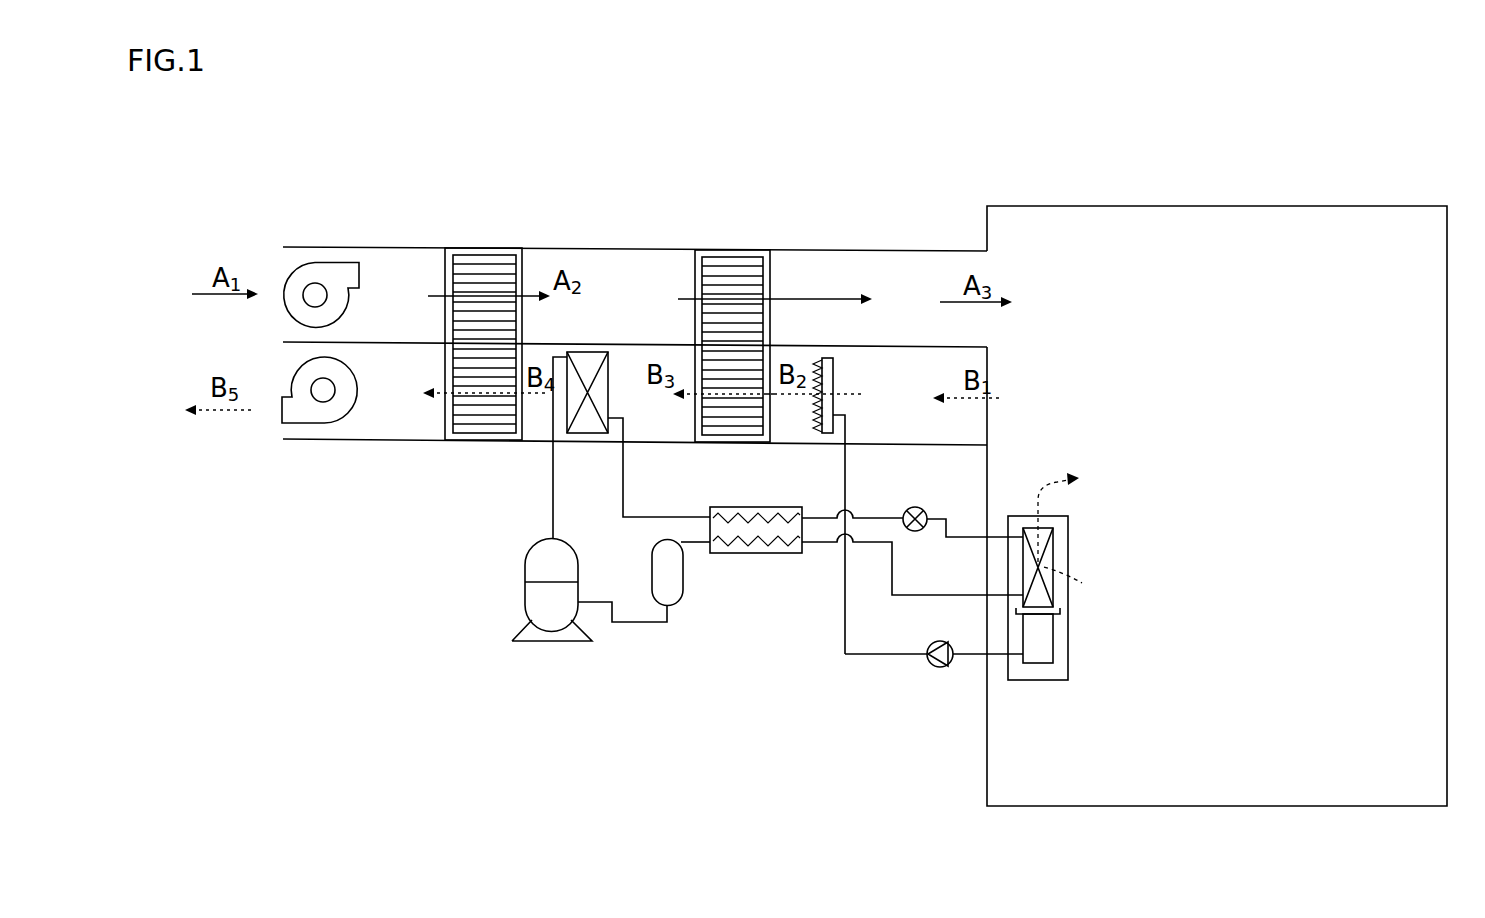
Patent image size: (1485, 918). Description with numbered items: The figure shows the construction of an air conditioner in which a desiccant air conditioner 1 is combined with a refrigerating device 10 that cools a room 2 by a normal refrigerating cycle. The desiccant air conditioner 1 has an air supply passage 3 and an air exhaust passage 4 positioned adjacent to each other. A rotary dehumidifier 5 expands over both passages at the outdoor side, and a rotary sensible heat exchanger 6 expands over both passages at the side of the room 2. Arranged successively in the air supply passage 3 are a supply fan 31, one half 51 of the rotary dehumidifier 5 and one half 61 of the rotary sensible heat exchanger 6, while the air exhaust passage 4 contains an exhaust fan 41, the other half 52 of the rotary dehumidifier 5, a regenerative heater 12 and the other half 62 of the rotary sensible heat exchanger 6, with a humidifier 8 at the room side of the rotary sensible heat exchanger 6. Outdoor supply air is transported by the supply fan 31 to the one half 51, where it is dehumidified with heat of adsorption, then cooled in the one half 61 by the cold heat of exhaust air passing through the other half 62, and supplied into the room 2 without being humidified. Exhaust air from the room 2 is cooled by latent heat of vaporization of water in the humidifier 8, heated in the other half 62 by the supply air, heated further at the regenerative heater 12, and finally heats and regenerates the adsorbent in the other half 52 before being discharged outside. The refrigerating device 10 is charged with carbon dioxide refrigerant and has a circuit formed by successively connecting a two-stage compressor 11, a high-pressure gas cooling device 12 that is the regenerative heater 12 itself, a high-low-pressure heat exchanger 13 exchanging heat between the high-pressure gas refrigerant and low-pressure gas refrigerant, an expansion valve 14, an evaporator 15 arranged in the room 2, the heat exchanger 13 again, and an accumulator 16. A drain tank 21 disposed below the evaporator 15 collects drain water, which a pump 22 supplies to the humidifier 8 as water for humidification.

The desiccant air conditioner 1 is at (613, 228).
The room 2 is at (1073, 206).
The air supply passage 3 is at (415, 247).
The air exhaust passage 4 is at (390, 443).
The rotary dehumidifier 5 is at (480, 250).
The rotary sensible heat exchanger 6 is at (730, 250).
The humidifier 8 is at (826, 435).
The refrigerating device 10 is at (640, 652).
The two-stage compressor 11 is at (525, 600).
The regenerative heater 12 is at (597, 435).
The high-low-pressure heat exchanger 13 is at (785, 555).
The expansion valve 14 is at (918, 507).
The evaporator 15 is at (1053, 550).
The accumulator 16 is at (683, 580).
The drain tank 21 is at (1053, 645).
The pump 22 is at (937, 667).
The supply fan 31 is at (316, 257).
The exhaust fan 41 is at (313, 425).
The one half of rotary dehumidifier 51 is at (535, 262).
The other half of rotary dehumidifier 52 is at (447, 415).
The one half of rotary sensible heat exchanger 61 is at (692, 280).
The other half of rotary sensible heat exchanger 62 is at (693, 420).